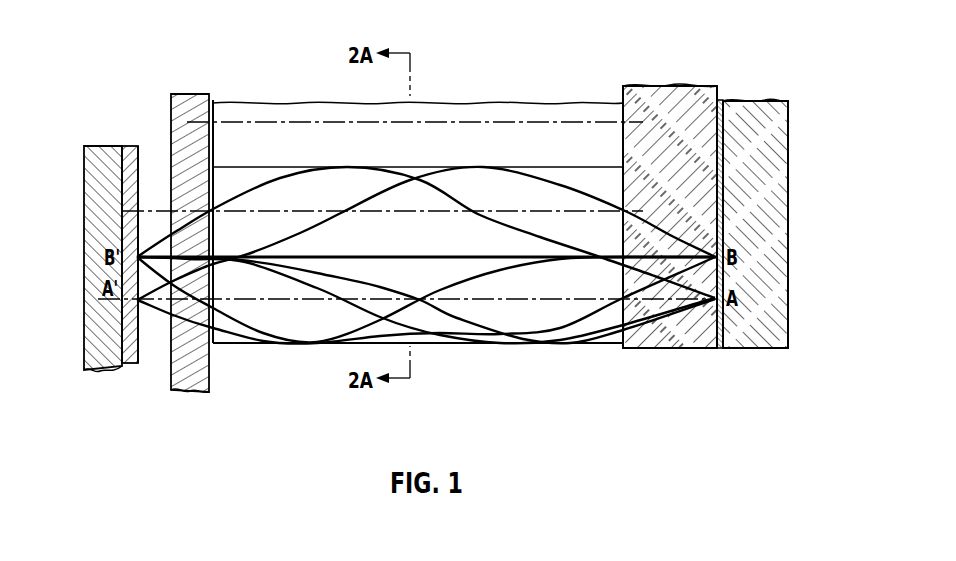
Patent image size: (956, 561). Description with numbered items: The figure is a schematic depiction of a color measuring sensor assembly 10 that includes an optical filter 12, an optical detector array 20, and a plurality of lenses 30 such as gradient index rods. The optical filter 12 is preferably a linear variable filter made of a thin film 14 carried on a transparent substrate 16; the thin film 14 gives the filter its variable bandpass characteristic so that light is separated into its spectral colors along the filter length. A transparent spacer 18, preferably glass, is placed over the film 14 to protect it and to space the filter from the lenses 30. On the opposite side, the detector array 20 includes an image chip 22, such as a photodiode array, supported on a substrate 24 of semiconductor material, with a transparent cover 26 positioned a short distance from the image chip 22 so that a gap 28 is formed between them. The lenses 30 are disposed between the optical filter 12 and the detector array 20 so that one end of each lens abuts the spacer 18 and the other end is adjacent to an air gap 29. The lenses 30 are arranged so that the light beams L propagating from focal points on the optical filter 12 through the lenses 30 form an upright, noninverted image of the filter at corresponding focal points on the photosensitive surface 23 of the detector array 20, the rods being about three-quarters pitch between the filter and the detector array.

The color measuring sensor assembly 10 is at (323, 78).
The optical filter 12 is at (753, 183).
The thin film 14 is at (722, 102).
The transparent substrate 16 is at (773, 160).
The transparent spacer 18 is at (668, 88).
The optical detector array 20 is at (120, 221).
The image chip 22 is at (127, 148).
The photosensitive surface 23 is at (138, 147).
The substrate 24 is at (84, 167).
The transparent cover 26 is at (202, 97).
The gap 28 is at (155, 167).
The air gap 29 is at (213, 100).
The lenses 30 is at (434, 150).
The light beams L is at (566, 346).